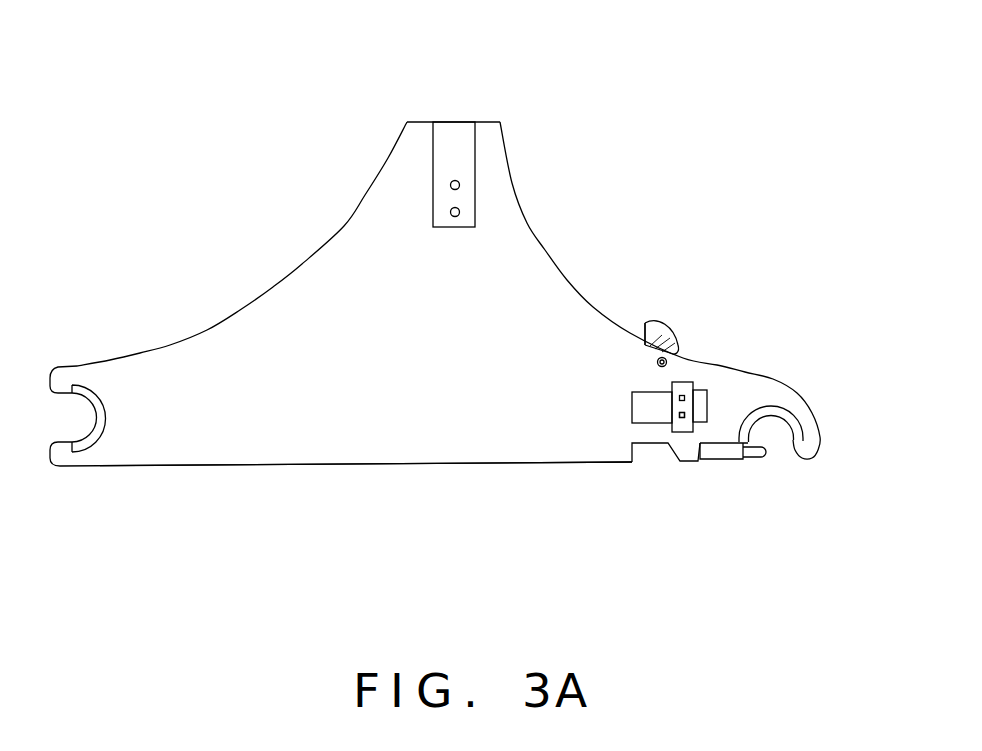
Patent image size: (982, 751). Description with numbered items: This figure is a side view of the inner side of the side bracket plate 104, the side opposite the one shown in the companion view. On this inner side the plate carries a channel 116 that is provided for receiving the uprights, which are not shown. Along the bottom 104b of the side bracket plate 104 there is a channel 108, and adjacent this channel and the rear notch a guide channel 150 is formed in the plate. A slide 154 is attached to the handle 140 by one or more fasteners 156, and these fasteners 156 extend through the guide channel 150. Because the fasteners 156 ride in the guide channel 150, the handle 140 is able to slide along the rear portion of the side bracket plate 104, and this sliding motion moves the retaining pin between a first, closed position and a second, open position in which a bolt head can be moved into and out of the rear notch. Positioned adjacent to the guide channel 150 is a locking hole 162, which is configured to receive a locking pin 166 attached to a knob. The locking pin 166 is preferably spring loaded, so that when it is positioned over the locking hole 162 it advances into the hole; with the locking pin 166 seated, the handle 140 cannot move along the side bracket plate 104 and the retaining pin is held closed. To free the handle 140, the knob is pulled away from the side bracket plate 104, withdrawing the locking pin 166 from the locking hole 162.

The side bracket plate 104 is at (257, 465).
The bottom of the side bracket plate 104b is at (468, 465).
The channel 108 is at (657, 453).
The channel 116 is at (462, 152).
The handle 140 is at (663, 323).
The guide channel 150 is at (632, 425).
The slide 154 is at (697, 397).
The fasteners 156 is at (683, 418).
The locking hole 162 is at (677, 352).
The locking pin 166 is at (645, 323).